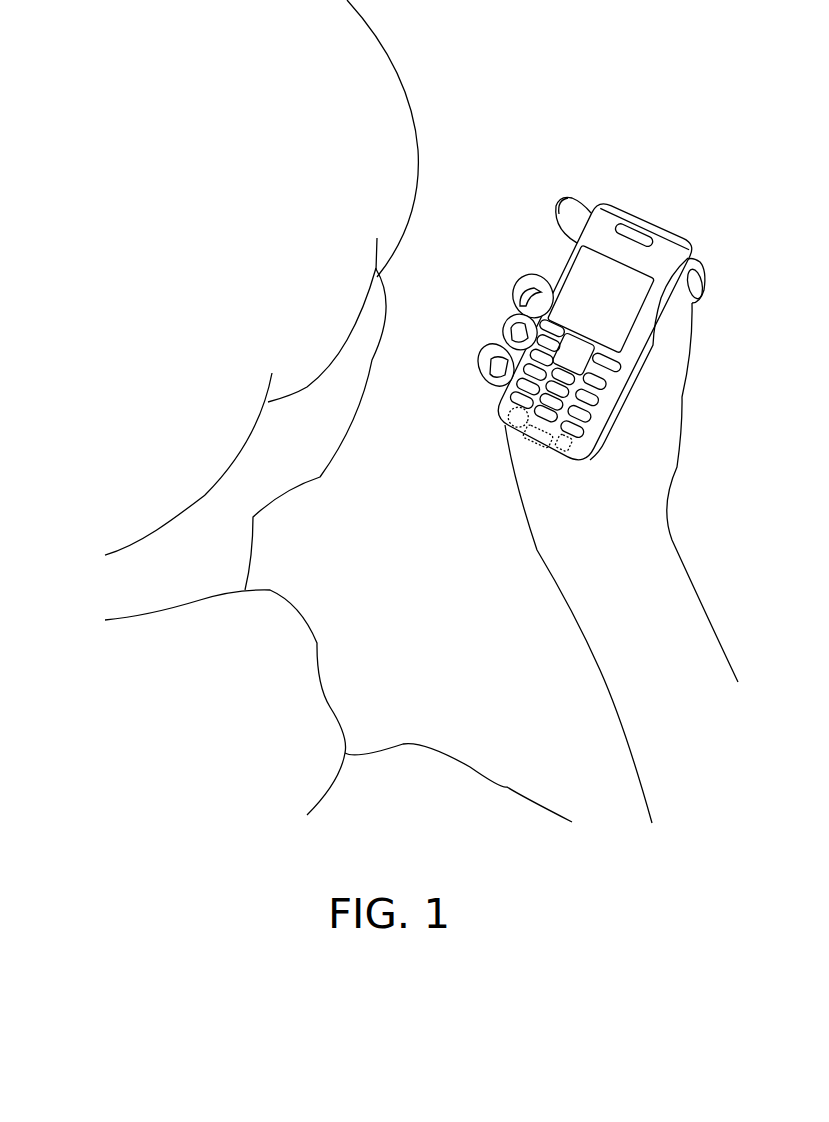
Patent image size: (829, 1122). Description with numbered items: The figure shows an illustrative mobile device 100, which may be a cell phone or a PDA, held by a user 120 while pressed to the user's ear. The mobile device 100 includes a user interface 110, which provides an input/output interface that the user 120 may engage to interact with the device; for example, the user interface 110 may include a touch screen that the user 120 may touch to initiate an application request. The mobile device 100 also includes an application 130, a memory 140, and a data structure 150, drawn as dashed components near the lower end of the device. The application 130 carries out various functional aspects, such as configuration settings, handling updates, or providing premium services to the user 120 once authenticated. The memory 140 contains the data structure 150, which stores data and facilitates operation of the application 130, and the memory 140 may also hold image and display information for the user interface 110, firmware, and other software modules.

The mobile device 100 is at (659, 199).
The user interface 110 is at (560, 268).
The user 120 is at (437, 133).
The application 130 is at (504, 422).
The memory 140 is at (531, 443).
The data structure 150 is at (557, 455).